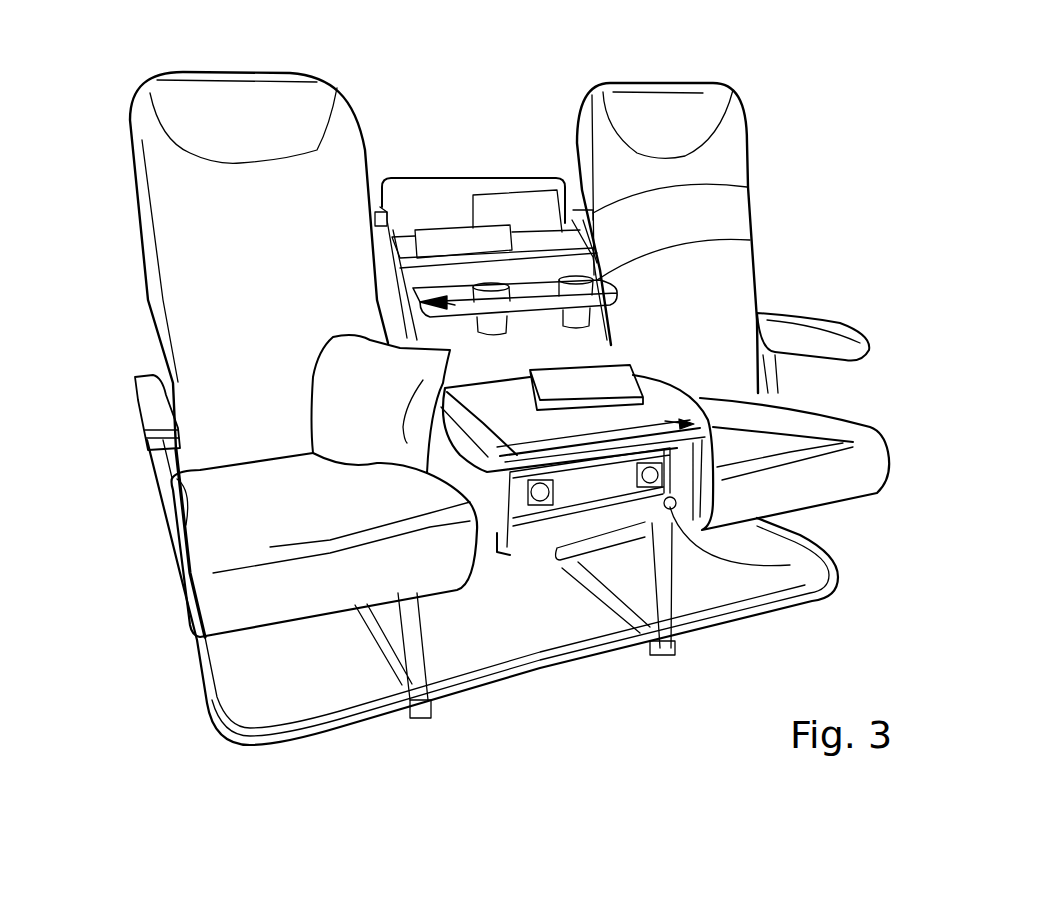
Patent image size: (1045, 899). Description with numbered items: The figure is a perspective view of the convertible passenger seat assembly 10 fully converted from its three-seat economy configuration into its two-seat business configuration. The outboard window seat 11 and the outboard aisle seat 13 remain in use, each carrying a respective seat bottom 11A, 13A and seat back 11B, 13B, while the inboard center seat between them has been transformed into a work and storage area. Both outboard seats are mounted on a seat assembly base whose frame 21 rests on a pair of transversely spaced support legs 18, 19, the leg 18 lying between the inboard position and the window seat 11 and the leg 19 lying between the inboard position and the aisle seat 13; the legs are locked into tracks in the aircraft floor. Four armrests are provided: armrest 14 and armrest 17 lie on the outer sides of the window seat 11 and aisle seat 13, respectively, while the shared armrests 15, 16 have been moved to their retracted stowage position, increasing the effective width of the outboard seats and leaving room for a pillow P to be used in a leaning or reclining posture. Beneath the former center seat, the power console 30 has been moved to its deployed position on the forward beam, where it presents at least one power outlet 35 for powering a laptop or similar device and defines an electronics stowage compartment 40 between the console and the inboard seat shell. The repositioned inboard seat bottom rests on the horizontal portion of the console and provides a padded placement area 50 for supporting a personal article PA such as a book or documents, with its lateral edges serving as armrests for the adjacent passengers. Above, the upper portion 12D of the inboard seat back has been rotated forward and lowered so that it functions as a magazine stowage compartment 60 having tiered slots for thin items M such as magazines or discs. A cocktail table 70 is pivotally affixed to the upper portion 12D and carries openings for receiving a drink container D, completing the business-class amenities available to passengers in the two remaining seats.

The convertible passenger seat assembly 10 is at (827, 157).
The first passenger seat 11 is at (685, 83).
The seat bottom 11A is at (855, 440).
The seat back 11B is at (737, 150).
The upper portion 12D is at (478, 178).
The third passenger seat 13 is at (255, 72).
The seat bottom 13A is at (223, 545).
The seat back 13B is at (185, 252).
The armrest 14 is at (850, 333).
The armrest 15 is at (747, 187).
The armrest 16 is at (383, 223).
The armrest 17 is at (153, 408).
The support leg 18 is at (663, 598).
The support leg 19 is at (420, 650).
The frame 21 is at (303, 730).
The power console 30 is at (534, 538).
The power outlet 35 is at (790, 565).
The electronics stowage compartment 40 is at (488, 500).
The placement area 50 is at (867, 427).
The magazine stowage compartment 60 is at (438, 198).
The cocktail table 70 is at (420, 297).
The drink container D is at (750, 240).
The thin items M is at (527, 215).
The pillow P is at (340, 387).
The personal article PA is at (620, 387).